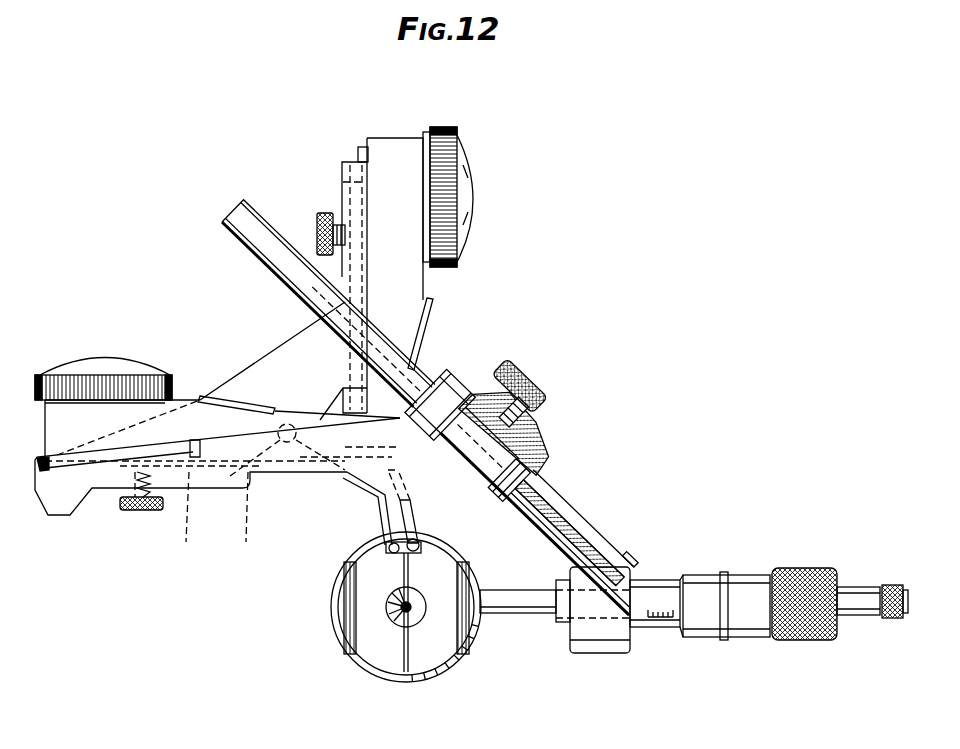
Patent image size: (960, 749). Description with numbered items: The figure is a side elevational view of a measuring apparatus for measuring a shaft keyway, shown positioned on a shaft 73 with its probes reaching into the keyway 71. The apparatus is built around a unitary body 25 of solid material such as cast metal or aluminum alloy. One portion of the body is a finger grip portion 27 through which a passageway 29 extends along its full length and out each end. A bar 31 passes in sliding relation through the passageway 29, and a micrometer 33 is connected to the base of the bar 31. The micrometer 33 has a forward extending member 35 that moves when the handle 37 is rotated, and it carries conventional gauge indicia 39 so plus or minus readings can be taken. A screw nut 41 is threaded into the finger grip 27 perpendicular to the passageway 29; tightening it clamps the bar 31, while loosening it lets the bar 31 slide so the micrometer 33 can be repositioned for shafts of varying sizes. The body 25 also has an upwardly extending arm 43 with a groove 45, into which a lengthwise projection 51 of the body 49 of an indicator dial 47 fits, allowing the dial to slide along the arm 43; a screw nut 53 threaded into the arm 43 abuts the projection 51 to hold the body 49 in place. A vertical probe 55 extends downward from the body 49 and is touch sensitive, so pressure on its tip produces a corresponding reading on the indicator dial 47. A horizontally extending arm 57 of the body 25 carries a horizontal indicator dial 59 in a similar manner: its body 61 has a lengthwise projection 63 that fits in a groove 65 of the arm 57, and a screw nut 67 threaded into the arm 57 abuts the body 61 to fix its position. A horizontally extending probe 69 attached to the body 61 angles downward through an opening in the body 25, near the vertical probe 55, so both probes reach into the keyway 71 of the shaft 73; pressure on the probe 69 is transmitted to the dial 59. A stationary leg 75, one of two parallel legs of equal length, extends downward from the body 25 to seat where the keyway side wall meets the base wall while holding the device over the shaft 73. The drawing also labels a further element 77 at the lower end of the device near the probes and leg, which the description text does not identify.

The unitary body 25 is at (412, 412).
The finger grip portion 27 is at (440, 372).
The passageway 29 is at (532, 480).
The bar 31 is at (243, 245).
The micrometer 33 is at (810, 548).
The forward extending member 35 is at (521, 607).
The handle 37 is at (800, 640).
The gauge indicia 39 is at (668, 612).
The screw nut 41 is at (522, 383).
The upwardly extending arm 43 is at (340, 194).
The groove 45 is at (342, 183).
The indicator dial 47 is at (472, 183).
The body 49 is at (390, 138).
The lengthwise projection 51 is at (358, 150).
The screw nut 53 is at (318, 240).
The vertical probe 55 is at (414, 494).
The horizontally extending arm 57 is at (226, 480).
The horizontal indicator dial 59 is at (120, 358).
The body 61 is at (108, 432).
The lengthwise projection 63 is at (180, 522).
The groove 65 is at (245, 520).
The screw nut 67 is at (147, 512).
The horizontally extending probe 69 is at (367, 494).
The keyway 71 is at (400, 556).
The shaft 73 is at (380, 660).
The stationary leg 75 is at (412, 518).
The pin block 77 is at (372, 550).